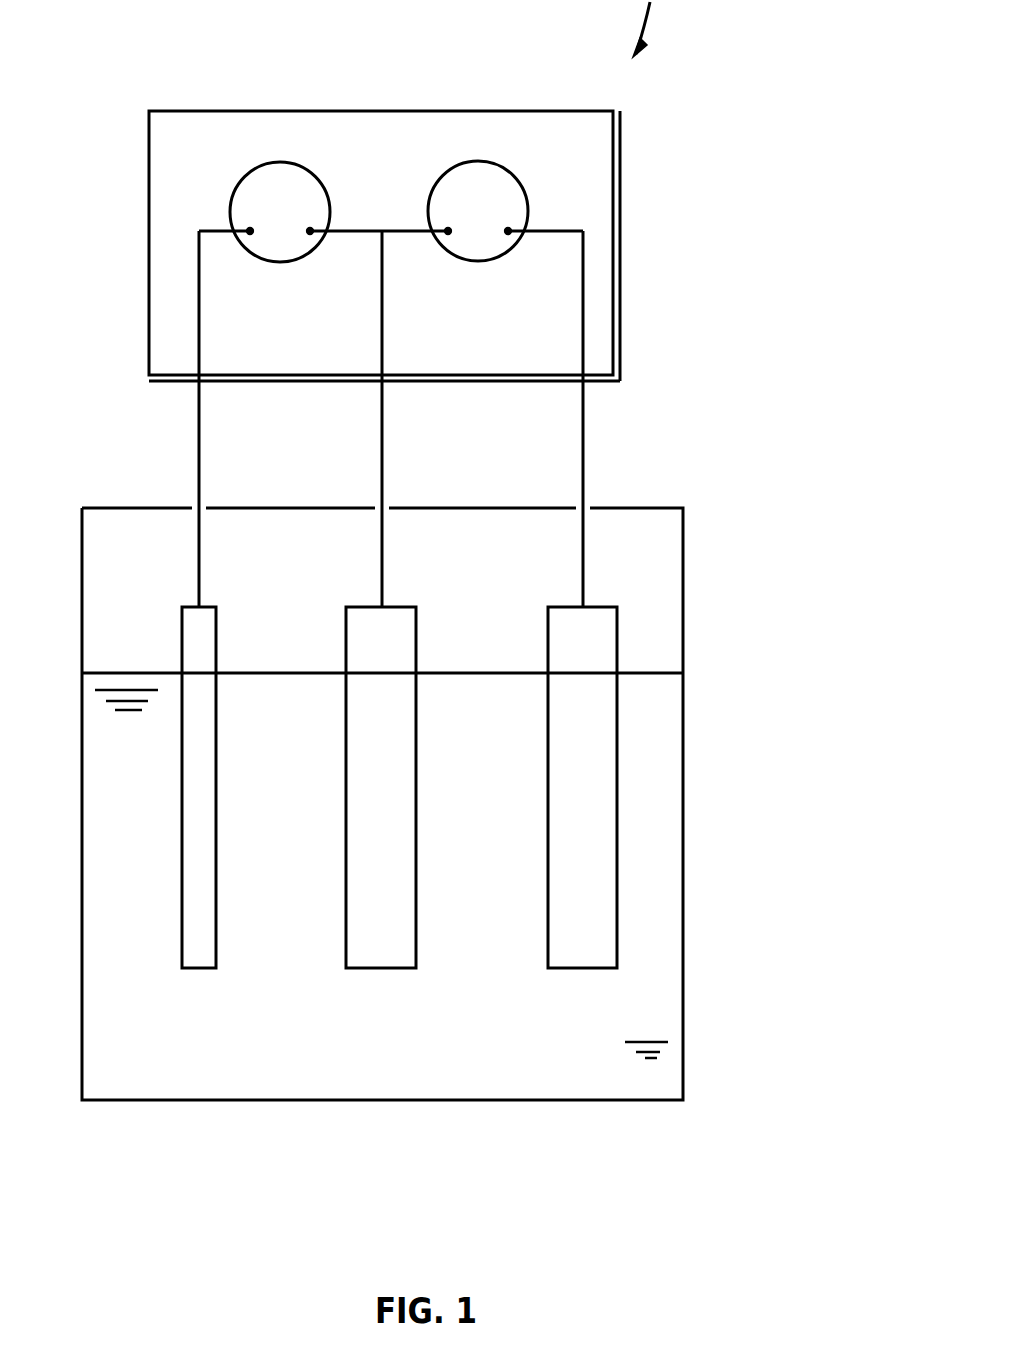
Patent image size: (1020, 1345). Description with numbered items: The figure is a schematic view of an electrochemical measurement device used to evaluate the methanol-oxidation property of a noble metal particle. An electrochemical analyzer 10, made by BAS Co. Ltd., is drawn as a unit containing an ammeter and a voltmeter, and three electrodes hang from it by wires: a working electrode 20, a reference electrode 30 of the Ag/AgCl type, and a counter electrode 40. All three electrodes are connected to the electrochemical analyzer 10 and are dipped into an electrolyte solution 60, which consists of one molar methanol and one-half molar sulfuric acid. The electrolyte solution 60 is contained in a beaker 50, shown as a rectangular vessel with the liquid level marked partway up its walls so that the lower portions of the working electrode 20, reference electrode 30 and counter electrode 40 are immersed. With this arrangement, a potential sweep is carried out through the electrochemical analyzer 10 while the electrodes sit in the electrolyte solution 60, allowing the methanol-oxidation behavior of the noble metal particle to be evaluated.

The electrochemical analyzer 10 is at (388, 127).
The working electrode 20 is at (382, 948).
The reference electrode 30 is at (587, 948).
The counter electrode 40 is at (197, 948).
The beaker 50 is at (683, 568).
The electrolyte solution 60 is at (655, 803).